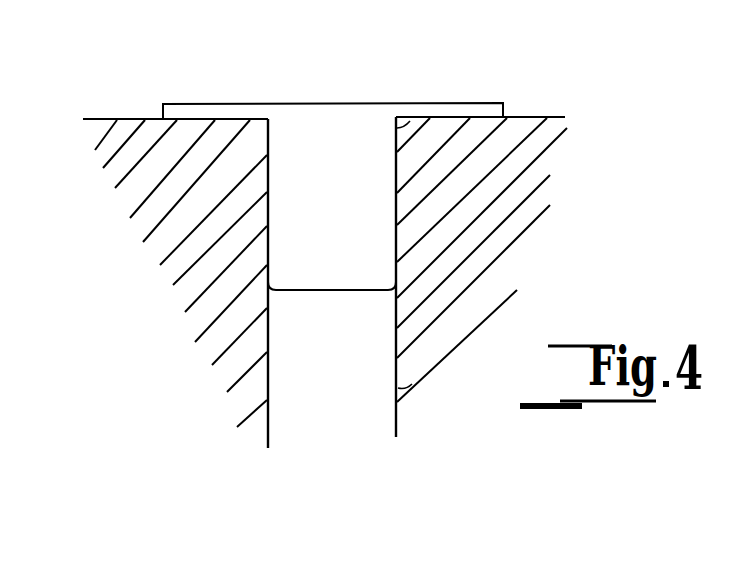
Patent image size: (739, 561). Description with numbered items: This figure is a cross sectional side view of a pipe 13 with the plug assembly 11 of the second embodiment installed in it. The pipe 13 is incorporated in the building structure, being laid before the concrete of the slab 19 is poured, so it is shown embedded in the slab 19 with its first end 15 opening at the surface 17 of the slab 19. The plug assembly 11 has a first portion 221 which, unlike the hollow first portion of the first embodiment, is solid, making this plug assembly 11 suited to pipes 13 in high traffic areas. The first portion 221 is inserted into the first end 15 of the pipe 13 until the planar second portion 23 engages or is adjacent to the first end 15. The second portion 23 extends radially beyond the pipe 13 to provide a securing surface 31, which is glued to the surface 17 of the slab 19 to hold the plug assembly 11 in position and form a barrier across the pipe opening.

The plug assembly 11 is at (303, 120).
The pipe 13 is at (398, 388).
The first end 15 is at (399, 127).
The surface 17 is at (135, 118).
The slab 19 is at (160, 210).
The second portion 23 is at (502, 103).
The securing surface 31 is at (212, 118).
The first portion 221 is at (378, 233).